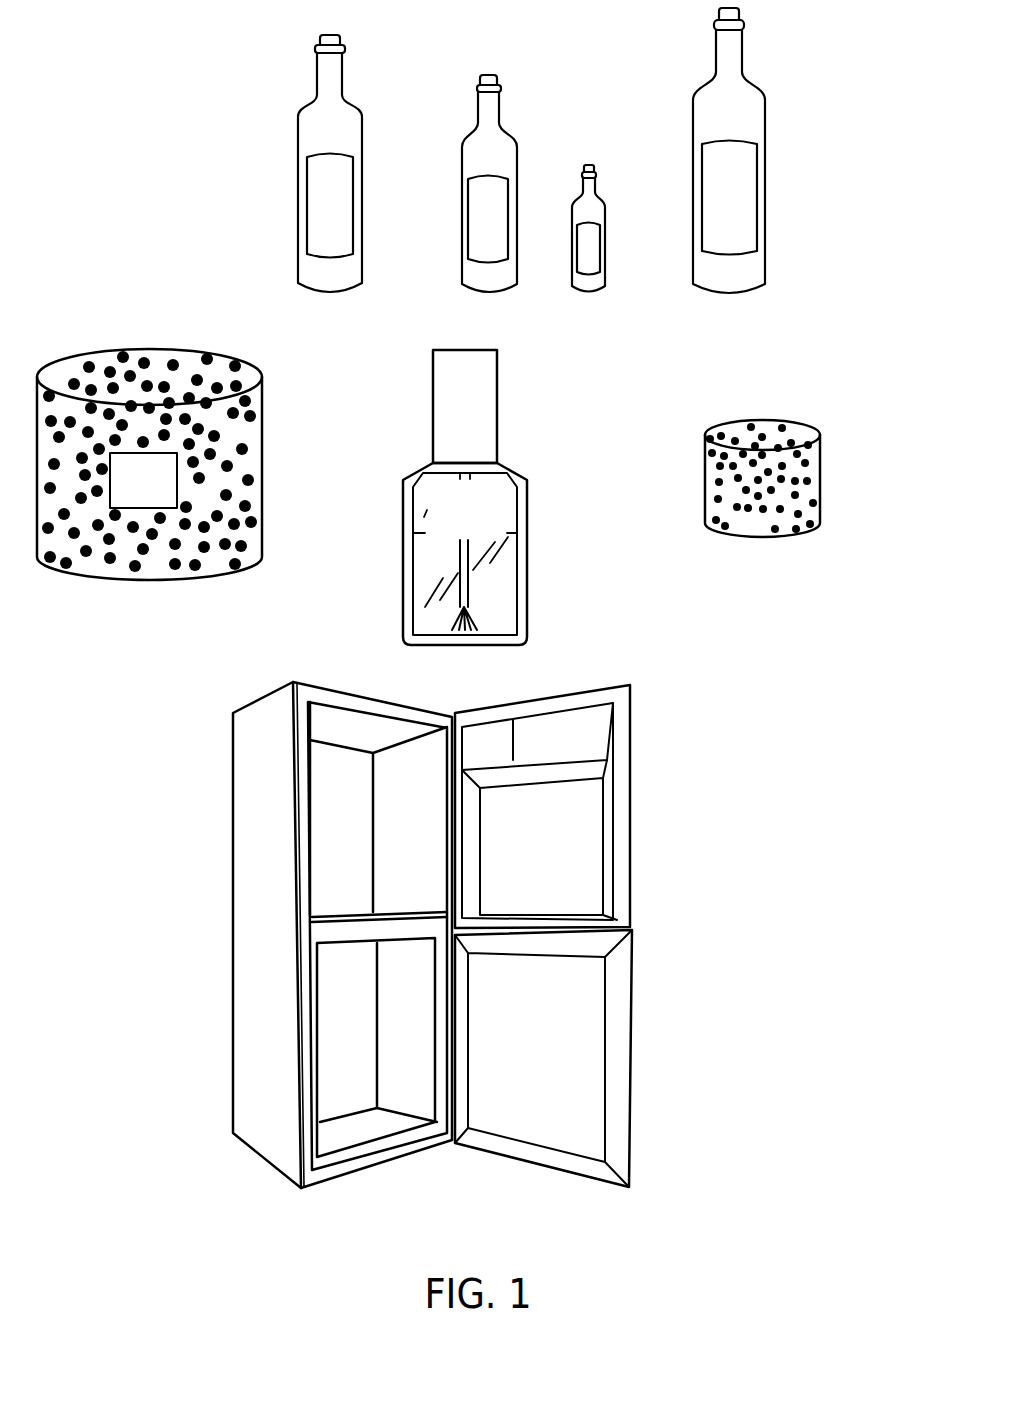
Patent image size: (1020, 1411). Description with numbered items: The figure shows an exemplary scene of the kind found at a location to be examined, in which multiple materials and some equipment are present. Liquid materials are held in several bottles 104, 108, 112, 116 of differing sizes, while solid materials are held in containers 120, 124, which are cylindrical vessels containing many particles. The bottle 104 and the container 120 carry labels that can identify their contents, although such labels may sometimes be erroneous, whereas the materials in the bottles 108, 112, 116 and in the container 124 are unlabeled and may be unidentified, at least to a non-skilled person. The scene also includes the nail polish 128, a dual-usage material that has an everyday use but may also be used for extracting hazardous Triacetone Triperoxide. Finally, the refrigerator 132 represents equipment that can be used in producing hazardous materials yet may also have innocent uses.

The bottle 104 is at (343, 66).
The bottle 108 is at (510, 134).
The bottle 112 is at (603, 197).
The bottle 116 is at (766, 115).
The container 120 is at (263, 402).
The container 124 is at (821, 467).
The nail polish 128 is at (528, 478).
The refrigerator 132 is at (631, 795).